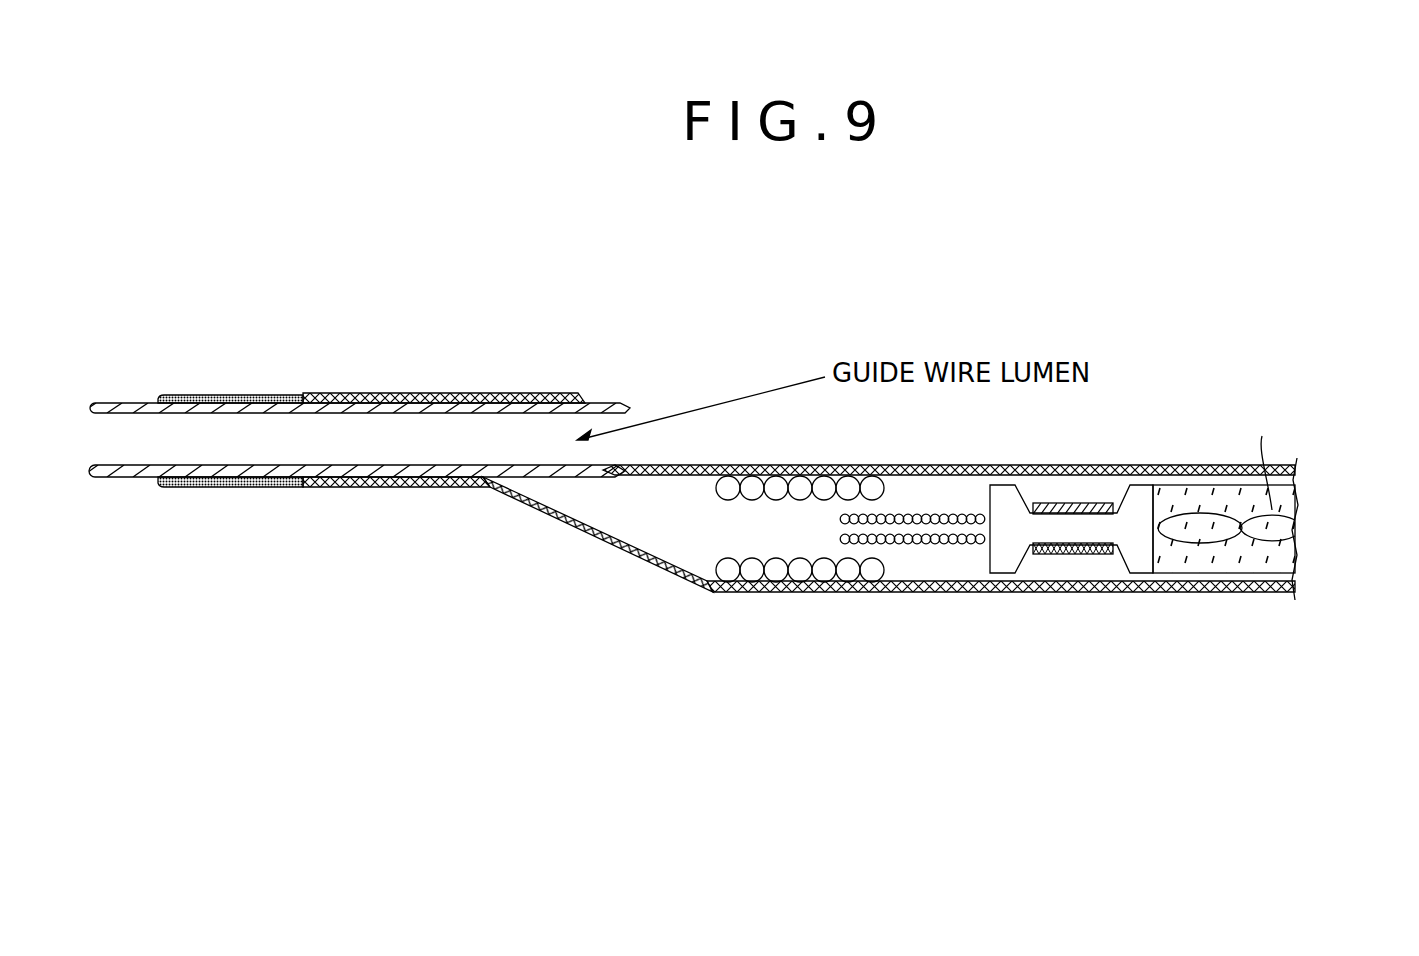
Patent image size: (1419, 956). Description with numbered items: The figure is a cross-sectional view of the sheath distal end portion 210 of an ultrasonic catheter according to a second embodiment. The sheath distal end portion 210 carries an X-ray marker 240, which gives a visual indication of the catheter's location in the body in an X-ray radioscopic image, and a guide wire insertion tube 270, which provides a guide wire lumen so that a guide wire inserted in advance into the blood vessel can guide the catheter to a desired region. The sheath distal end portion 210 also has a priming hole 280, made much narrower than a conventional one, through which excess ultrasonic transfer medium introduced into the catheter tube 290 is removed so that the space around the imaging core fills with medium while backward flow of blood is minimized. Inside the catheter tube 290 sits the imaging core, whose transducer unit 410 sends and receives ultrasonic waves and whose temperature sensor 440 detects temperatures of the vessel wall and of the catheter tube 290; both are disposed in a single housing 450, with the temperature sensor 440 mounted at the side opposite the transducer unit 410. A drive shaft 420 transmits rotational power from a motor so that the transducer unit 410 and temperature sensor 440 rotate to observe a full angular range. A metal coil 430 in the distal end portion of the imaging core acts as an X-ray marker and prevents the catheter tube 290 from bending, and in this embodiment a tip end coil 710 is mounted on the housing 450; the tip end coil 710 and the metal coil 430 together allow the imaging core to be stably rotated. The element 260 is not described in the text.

The sheath distal end portion 210 is at (1157, 396).
The X-ray marker 240 is at (206, 395).
The outer tube 260 is at (126, 470).
The guide wire insertion tube 270 is at (396, 393).
The priming hole 280 is at (567, 470).
The catheter tube 290 is at (1190, 462).
The transducer unit 410 is at (1076, 503).
The drive shaft 420 is at (1214, 560).
The metal coil 430 is at (801, 485).
The temperature sensor 440 is at (1080, 556).
The housing 450 is at (1003, 492).
The tip end coil 710 is at (918, 514).